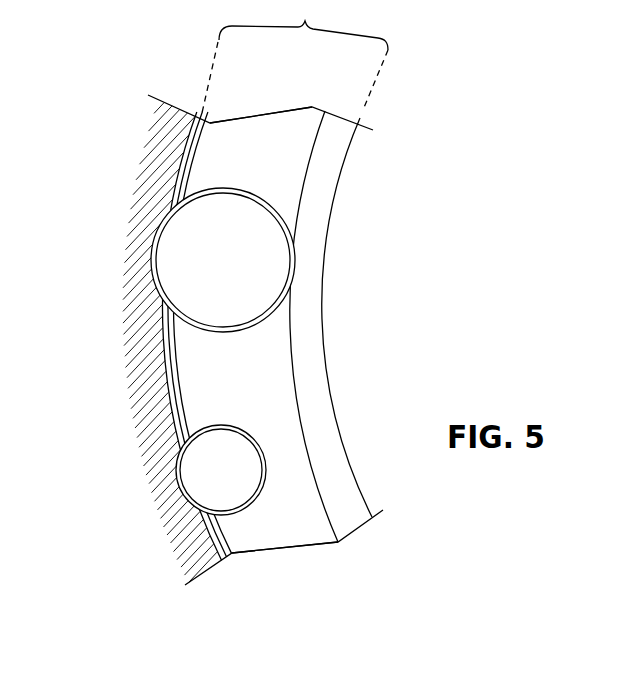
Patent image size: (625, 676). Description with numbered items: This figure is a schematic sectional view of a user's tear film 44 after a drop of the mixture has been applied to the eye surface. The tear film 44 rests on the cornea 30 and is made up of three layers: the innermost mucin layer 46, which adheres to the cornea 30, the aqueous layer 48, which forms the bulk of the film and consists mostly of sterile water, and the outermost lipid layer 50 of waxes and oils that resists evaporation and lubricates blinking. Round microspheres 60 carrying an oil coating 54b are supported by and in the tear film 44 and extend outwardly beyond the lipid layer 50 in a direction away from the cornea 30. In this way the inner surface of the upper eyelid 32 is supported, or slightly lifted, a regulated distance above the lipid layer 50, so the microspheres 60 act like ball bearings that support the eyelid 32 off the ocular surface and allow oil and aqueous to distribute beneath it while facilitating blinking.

The cornea 30 is at (316, 332).
The upper eyelid 32 is at (147, 342).
The tear film 44 is at (295, 56).
The mucin layer 46 is at (338, 132).
The aqueous layer 48 is at (253, 137).
The lipid layer 50 is at (205, 117).
The oil coating 54b is at (157, 250).
The microspheres 60 is at (193, 259).